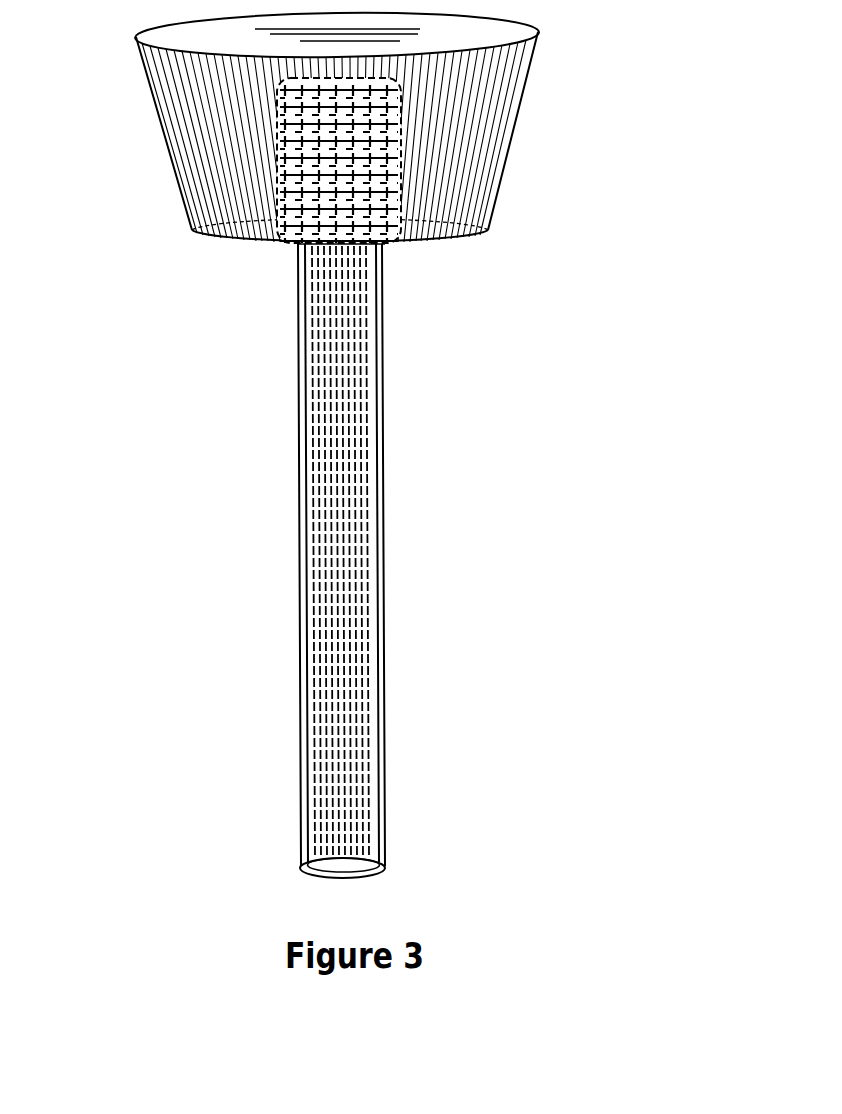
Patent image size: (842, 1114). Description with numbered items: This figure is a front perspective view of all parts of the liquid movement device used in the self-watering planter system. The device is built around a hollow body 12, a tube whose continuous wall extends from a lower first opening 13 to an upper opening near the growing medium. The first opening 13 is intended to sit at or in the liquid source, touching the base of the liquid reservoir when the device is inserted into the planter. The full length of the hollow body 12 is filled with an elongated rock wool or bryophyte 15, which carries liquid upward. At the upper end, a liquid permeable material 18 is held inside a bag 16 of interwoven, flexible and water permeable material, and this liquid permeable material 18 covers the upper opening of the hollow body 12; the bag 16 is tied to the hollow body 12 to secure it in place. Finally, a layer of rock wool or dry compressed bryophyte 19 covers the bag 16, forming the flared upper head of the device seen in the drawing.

The hollow body 12 is at (302, 449).
The first opening of hollow body 13 is at (381, 862).
The rock wool or bryophyte 15 is at (338, 508).
The bag of interwoven material 16 is at (408, 197).
The liquid permeable material 18 is at (403, 165).
The layer of rock wool or dry compressed bryophyte 19 is at (187, 127).